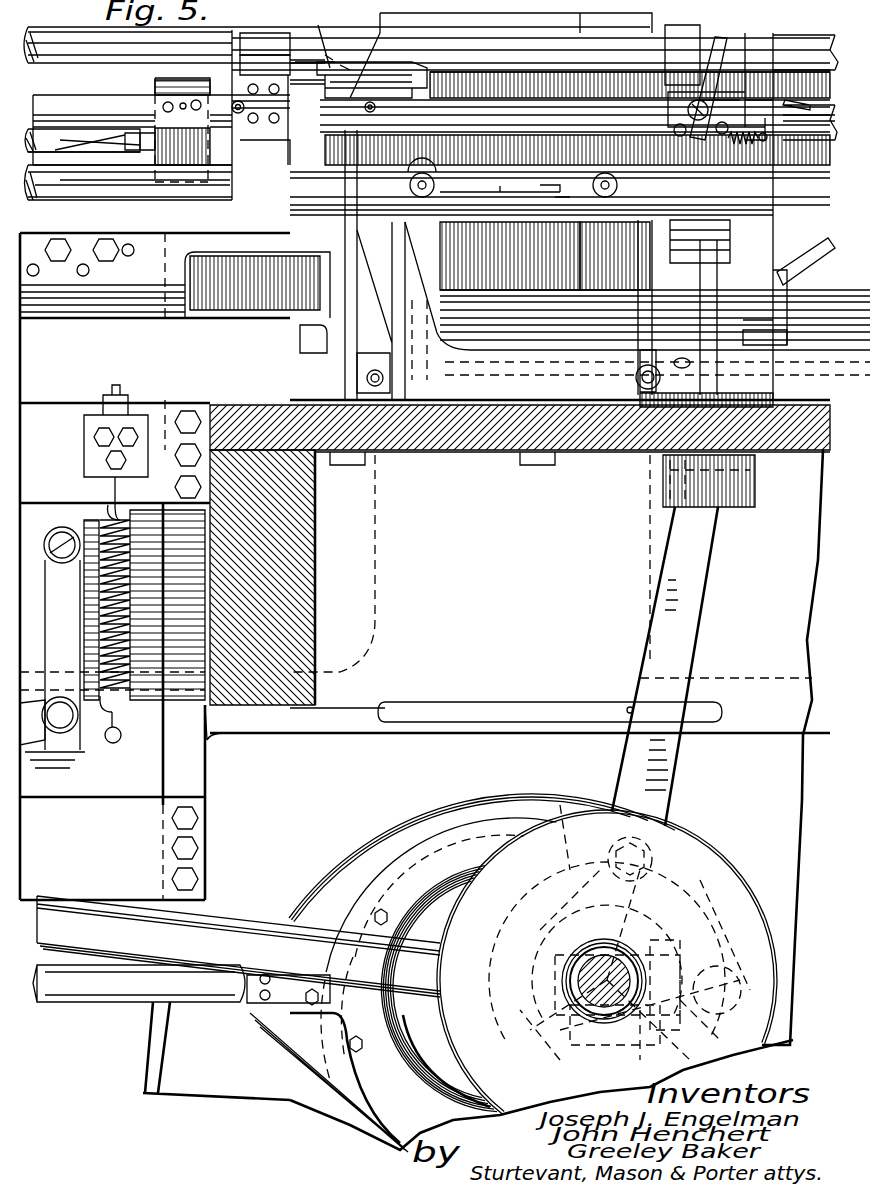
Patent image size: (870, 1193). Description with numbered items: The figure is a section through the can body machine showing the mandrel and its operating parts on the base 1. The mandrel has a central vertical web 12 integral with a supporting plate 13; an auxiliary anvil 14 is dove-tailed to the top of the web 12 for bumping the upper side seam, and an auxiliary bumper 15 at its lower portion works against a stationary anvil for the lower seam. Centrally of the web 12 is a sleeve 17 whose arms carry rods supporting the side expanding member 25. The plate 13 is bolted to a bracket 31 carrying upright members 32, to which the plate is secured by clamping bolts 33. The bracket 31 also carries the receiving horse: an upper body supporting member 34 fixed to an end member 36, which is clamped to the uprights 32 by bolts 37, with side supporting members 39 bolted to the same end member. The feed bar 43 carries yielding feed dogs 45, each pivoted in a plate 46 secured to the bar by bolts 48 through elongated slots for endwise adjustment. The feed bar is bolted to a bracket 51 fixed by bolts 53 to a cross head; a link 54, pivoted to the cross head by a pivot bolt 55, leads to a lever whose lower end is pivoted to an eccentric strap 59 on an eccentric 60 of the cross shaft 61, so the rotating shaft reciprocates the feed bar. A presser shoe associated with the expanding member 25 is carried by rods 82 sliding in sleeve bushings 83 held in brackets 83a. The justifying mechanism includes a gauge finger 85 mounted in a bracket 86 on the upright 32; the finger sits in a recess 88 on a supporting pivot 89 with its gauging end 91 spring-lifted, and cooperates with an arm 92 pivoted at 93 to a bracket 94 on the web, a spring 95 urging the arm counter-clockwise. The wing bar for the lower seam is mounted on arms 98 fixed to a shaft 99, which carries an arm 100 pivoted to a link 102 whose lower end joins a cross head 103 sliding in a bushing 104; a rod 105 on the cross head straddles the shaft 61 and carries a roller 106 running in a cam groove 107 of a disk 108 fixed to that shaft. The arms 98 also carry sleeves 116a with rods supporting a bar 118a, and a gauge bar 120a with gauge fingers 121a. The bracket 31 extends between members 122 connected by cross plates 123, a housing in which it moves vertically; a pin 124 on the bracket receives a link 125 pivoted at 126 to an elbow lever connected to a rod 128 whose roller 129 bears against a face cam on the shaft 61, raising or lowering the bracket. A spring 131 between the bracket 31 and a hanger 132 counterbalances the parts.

The base 1 is at (520, 725).
The central vertical web portion 12 is at (560, 70).
The supporting plate 13 is at (318, 270).
The auxiliary anvil 14 is at (528, 42).
The auxiliary bumper 15 is at (790, 340).
The sleeve 17 is at (778, 210).
The side expanding member 25 is at (757, 187).
The bracket 31 is at (155, 566).
The upright members 32 is at (290, 32).
The clamping bolts 33 is at (105, 255).
The upper body supporting member 34 is at (52, 22).
The end member 36 is at (261, 112).
The bolts 37 is at (285, 58).
The supporting members 39 is at (126, 190).
The feed bar 43 is at (48, 92).
The feed dogs 45 is at (355, 100).
The plate 46 is at (372, 100).
The bolts 48 is at (236, 100).
The bracket 51 is at (226, 150).
The bolts 53 is at (194, 102).
The link 54 is at (68, 152).
The pivot bolt 55 is at (148, 120).
The eccentric strap 59 is at (108, 990).
The eccentric 60 is at (424, 815).
The cross shaft 61 is at (575, 965).
The rods 82 is at (590, 185).
The sleeve bushings 83 is at (408, 184).
The brackets 83a is at (520, 320).
The gauge finger 85 is at (345, 65).
The bracket 86 is at (440, 68).
The recess 88 is at (420, 75).
The supporting pivot 89 is at (405, 90).
The gauging end 91 is at (560, 162).
The arm 92 is at (712, 58).
The pivot 93 is at (696, 100).
The bracket 94 is at (720, 100).
The spring 95 is at (745, 140).
The arms 98 is at (575, 236).
The shaft 99 is at (486, 222).
The arm 100 is at (732, 240).
The link 102 is at (760, 300).
The cross head 103 is at (648, 467).
The bushing 104 is at (663, 490).
The rod 105 is at (700, 558).
The roller 106 is at (680, 848).
The cam groove 107 is at (587, 803).
The disk 108 is at (692, 880).
The sleeves 116a is at (355, 385).
The bar 118a is at (462, 320).
The gauge bar 120a is at (756, 360).
The gauge fingers 121a is at (760, 380).
The members 122 is at (187, 757).
The cross plates 123 is at (50, 403).
The pin 124 is at (58, 540).
The link 125 is at (125, 597).
The pivot 126 is at (66, 718).
The rod 128 is at (238, 946).
The roller 129 is at (544, 1095).
The spring 131 is at (125, 645).
The hanger 132 is at (84, 448).